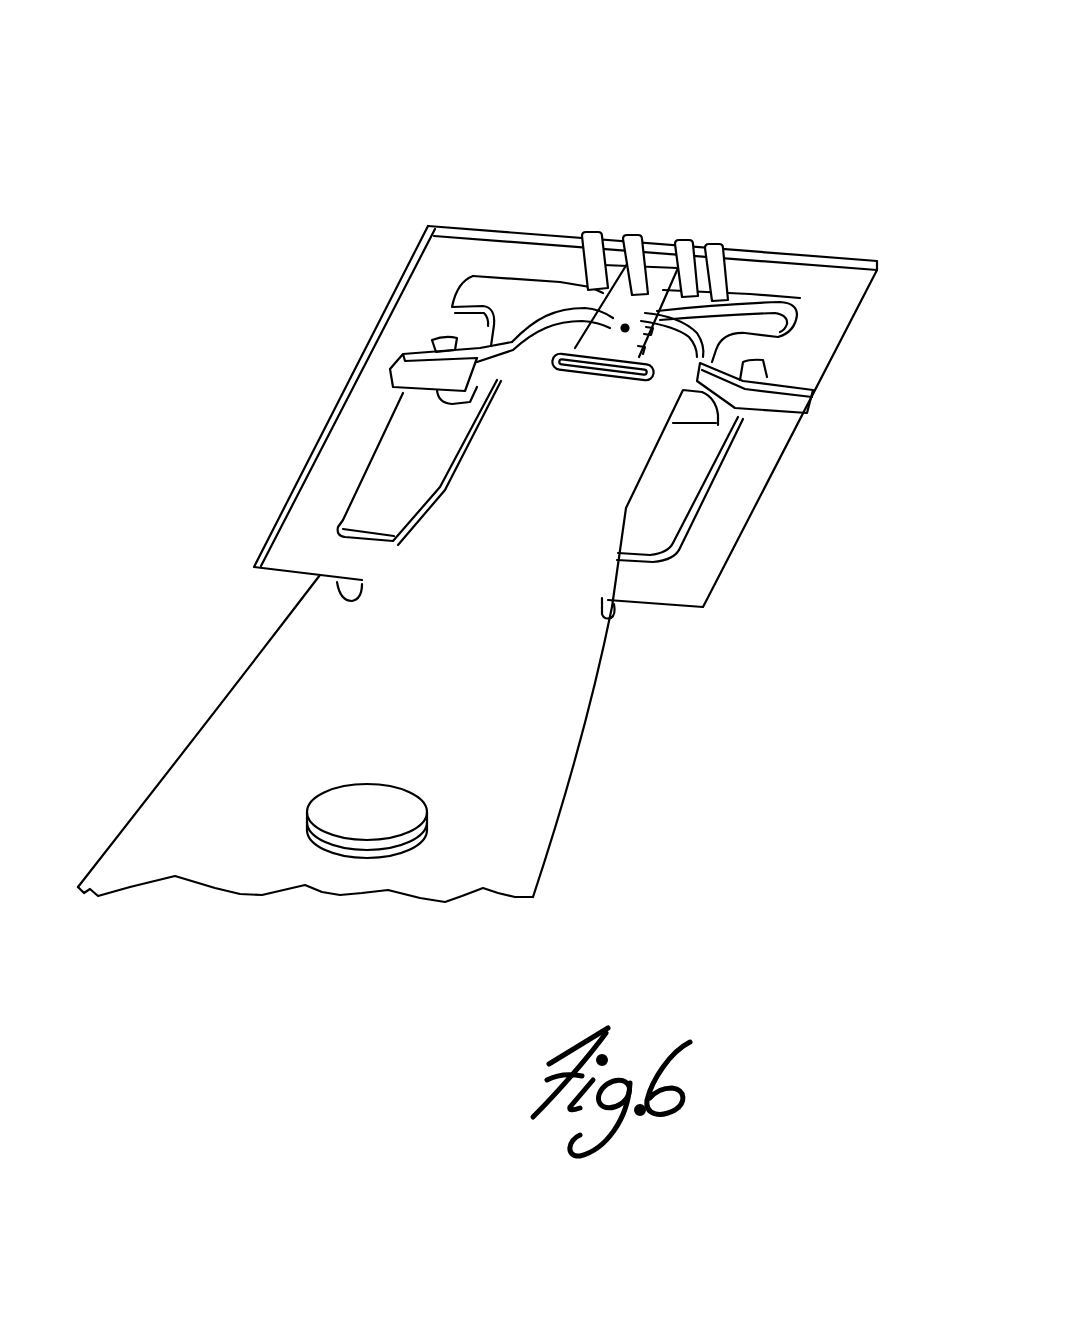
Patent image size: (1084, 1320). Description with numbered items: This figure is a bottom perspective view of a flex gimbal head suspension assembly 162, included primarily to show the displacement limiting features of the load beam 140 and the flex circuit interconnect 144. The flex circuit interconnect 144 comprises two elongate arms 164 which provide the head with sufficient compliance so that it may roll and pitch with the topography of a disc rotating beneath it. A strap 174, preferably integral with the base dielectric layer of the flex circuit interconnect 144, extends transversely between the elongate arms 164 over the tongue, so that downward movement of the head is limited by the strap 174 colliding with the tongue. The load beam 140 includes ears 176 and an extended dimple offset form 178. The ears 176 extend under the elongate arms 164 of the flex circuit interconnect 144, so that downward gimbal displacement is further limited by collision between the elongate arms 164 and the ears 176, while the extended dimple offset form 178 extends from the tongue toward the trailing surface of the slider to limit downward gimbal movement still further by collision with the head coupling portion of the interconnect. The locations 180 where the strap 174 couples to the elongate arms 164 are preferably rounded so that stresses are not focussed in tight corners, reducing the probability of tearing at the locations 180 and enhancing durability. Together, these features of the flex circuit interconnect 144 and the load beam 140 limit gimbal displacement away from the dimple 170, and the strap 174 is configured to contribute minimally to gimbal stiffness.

The load beam 140 is at (518, 790).
The flex circuit interconnect 144 is at (836, 259).
The head suspension assembly 162 is at (582, 307).
The elongate arms 164 is at (338, 470).
The dimple 170 is at (800, 303).
The strap 174 is at (718, 425).
The ears 176 is at (700, 386).
The extended dimple offset form 178 is at (634, 300).
The locations 180 is at (434, 338).